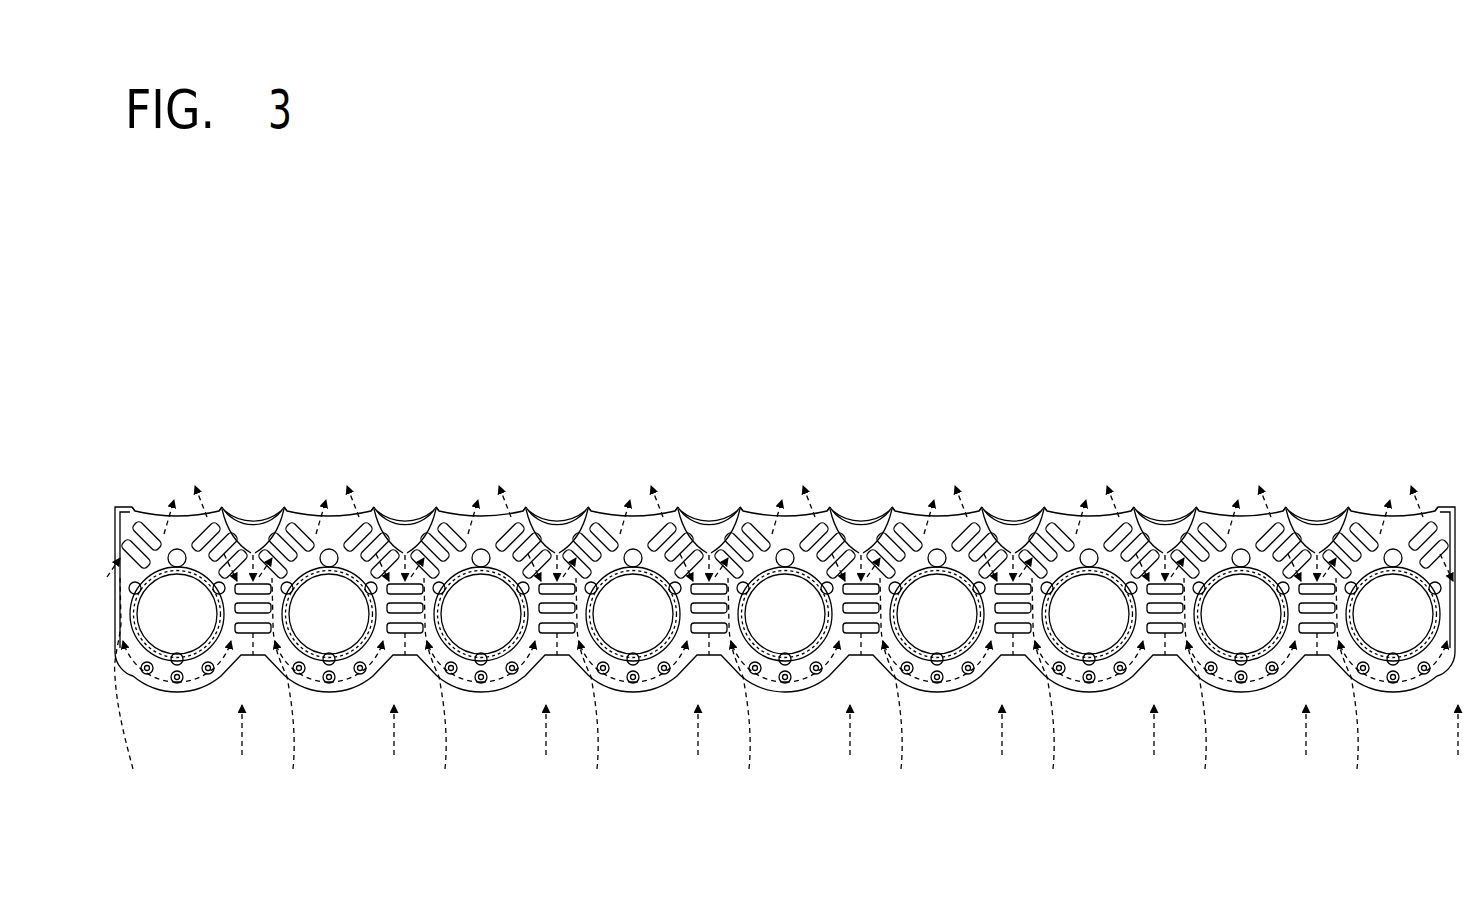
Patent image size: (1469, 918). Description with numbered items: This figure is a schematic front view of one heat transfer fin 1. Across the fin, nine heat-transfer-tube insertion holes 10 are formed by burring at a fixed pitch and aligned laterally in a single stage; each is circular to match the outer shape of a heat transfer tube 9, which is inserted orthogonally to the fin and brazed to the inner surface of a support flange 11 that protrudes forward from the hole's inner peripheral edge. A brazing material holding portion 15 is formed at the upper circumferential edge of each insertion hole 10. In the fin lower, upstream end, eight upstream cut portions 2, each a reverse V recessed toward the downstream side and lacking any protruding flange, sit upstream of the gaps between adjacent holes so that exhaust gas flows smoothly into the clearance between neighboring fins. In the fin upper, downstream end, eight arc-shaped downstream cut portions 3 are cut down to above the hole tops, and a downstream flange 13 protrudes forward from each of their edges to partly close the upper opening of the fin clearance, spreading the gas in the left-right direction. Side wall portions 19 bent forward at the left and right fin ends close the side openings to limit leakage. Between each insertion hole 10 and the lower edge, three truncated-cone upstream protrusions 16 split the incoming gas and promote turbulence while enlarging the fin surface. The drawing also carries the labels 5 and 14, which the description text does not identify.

The heat transfer fin 1 is at (888, 364).
The upstream cut portion 2 is at (785, 709).
The downstream cut portion 3 is at (250, 503).
The bottom edge portion 5 is at (1010, 658).
The heat transfer tube 9 is at (740, 689).
The heat-transfer-tube insertion hole 10 is at (163, 627).
The support flange 11 is at (132, 504).
The downstream flange 13 is at (219, 504).
The projection 14 is at (527, 505).
The brazing material holding portion 15 is at (172, 549).
The upstream protrusion 16 is at (1429, 738).
The side wall portion 19 is at (113, 508).